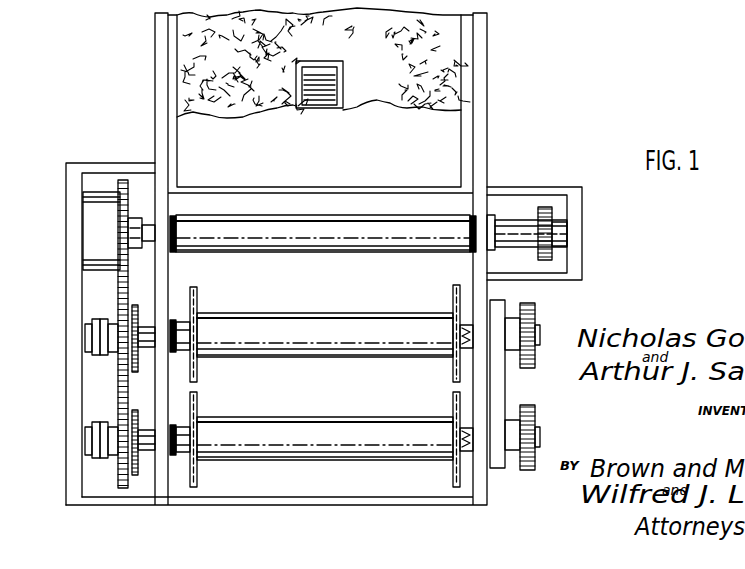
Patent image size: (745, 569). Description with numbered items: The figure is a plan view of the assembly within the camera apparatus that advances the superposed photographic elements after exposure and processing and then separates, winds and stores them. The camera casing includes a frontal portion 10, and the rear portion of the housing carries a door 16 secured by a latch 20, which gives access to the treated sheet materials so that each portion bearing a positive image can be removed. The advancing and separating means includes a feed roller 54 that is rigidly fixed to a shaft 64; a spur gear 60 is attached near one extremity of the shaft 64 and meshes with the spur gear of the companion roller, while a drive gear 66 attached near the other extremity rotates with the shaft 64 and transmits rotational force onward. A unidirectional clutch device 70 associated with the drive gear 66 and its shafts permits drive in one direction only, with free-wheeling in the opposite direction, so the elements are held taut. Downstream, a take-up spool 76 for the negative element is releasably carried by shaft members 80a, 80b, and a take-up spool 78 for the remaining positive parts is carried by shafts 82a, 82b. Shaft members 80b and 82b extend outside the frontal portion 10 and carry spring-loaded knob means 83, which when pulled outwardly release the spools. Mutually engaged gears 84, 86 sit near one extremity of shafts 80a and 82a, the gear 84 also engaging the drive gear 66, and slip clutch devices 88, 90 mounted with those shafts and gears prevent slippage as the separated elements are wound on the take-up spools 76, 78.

The frontal portion 10 is at (488, 138).
The door 16 is at (185, 60).
The latch 20 is at (320, 100).
The feed roller 54 is at (343, 243).
The spur gear 60 is at (538, 250).
The shaft 64 is at (508, 228).
The drive gear 66 is at (128, 195).
The unidirectional clutch device 70 is at (98, 218).
The take-up spool 76 is at (343, 348).
The take-up spool 78 is at (350, 452).
The shaft member 80a is at (185, 352).
The shaft member 80b is at (463, 350).
The shaft 82a is at (185, 456).
The shaft 82b is at (462, 455).
The spring-loaded knob means 83 is at (527, 408).
The gear 84 is at (120, 292).
The gear 86 is at (125, 402).
The slip clutch device 88 is at (131, 368).
The slip clutch device 90 is at (135, 473).